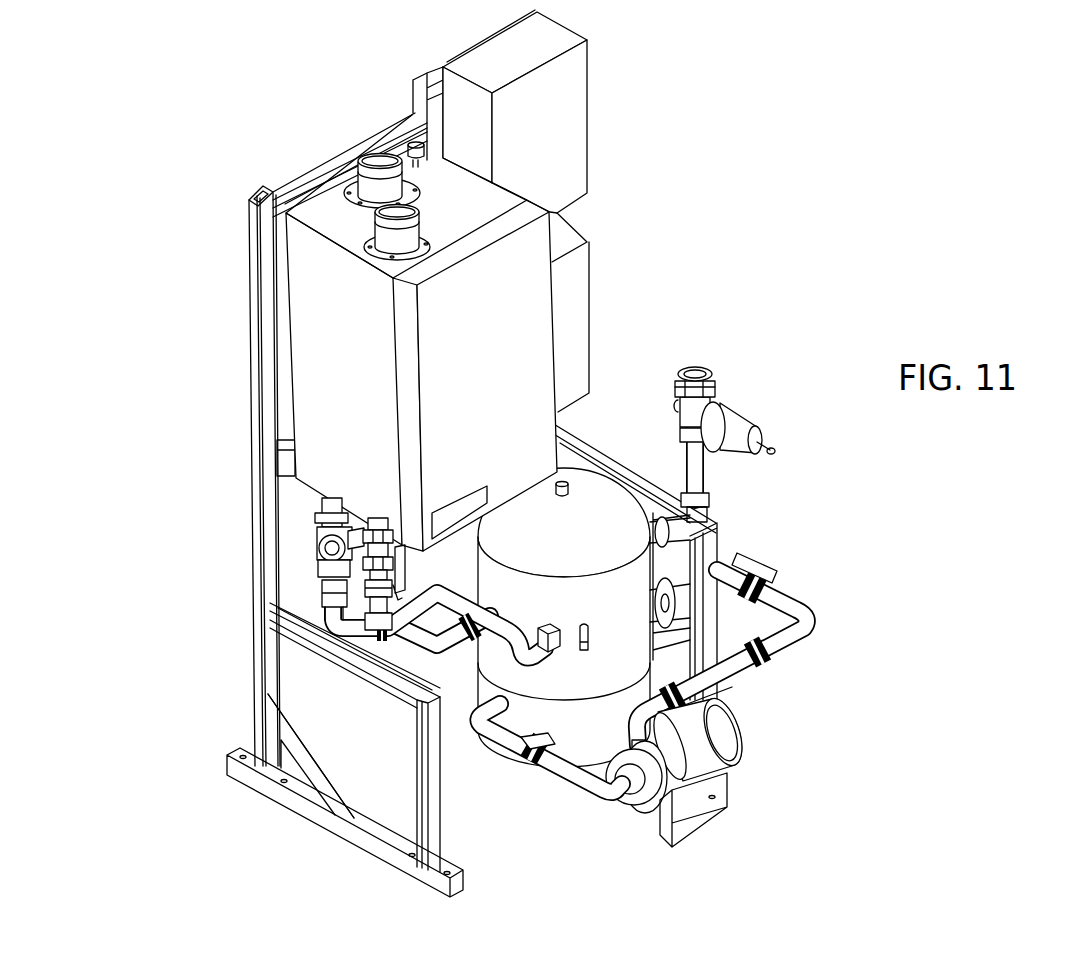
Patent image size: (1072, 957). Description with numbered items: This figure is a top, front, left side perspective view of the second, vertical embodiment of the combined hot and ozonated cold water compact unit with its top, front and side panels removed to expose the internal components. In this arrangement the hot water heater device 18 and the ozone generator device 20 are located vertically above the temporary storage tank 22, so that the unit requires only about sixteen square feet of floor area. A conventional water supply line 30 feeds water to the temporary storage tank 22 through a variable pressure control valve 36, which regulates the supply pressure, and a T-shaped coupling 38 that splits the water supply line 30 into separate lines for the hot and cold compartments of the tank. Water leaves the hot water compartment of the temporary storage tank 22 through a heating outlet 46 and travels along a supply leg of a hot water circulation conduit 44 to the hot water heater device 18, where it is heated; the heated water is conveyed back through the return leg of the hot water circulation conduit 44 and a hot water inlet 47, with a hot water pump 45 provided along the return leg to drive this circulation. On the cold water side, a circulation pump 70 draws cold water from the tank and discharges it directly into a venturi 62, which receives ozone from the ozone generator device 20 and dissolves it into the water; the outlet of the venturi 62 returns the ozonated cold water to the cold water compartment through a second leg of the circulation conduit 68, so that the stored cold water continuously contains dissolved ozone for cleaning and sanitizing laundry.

The hot water heater device 18 is at (325, 357).
The ozone generator device 20 is at (578, 137).
The temporary storage tank 22 is at (604, 483).
The water supply line 30 is at (700, 482).
The variable pressure control valve 36 is at (750, 417).
The T-shaped coupling 38 is at (702, 512).
The hot water circulation conduit 44 is at (373, 630).
The hot water pump 45 is at (320, 540).
The heating outlet 46 is at (548, 633).
The hot water inlet 47 is at (500, 607).
The venturi 62 is at (772, 572).
The second leg of the circulation conduit 68 is at (588, 778).
The circulation pump 70 is at (747, 723).